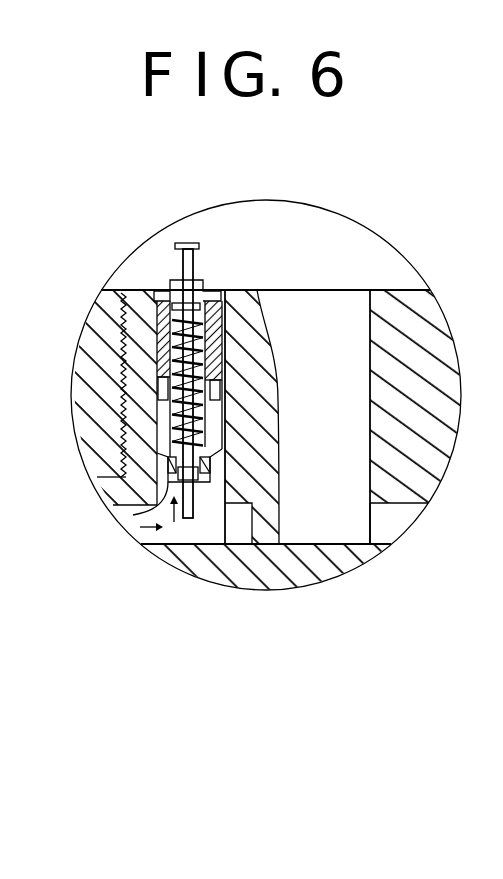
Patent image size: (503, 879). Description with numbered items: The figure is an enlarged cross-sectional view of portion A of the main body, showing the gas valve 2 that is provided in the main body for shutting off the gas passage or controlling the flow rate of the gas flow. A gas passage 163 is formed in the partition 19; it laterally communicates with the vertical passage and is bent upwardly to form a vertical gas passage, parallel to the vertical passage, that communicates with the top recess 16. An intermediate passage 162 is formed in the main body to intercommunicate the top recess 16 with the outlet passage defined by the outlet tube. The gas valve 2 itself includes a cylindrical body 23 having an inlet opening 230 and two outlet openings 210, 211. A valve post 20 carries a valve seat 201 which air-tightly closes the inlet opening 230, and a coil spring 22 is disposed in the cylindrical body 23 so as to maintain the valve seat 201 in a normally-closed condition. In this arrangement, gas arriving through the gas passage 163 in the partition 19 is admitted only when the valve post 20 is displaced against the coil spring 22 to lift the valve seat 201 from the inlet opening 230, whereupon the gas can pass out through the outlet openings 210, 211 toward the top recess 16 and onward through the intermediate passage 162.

The portion A is at (352, 215).
The gas valve 2 is at (88, 283).
The top recess 16 is at (384, 256).
The intermediate passage 162 is at (402, 520).
The gas passage 163 is at (147, 541).
The partition 19 is at (268, 485).
The valve post 20 is at (187, 243).
The valve seat 201 is at (133, 515).
The outlet opening 210 is at (163, 289).
The outlet opening 211 is at (212, 290).
The coil spring 22 is at (247, 305).
The cylindrical body 23 is at (118, 425).
The inlet opening 230 is at (258, 443).